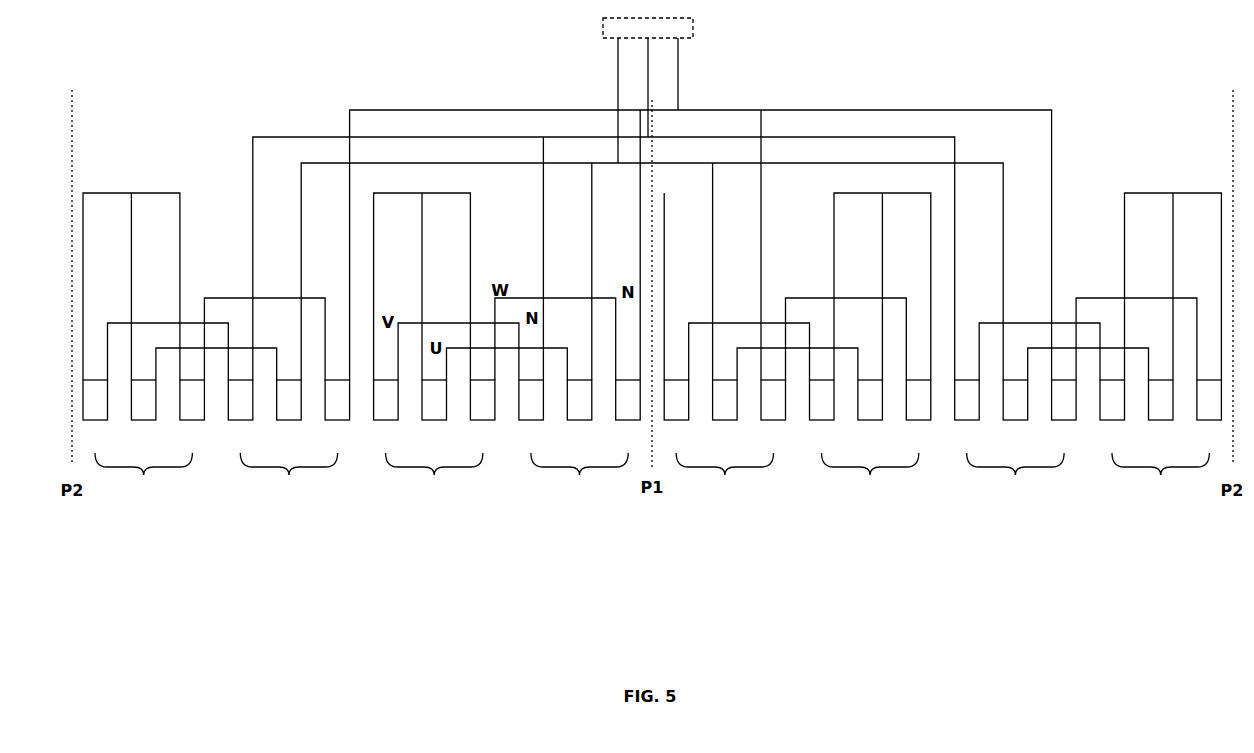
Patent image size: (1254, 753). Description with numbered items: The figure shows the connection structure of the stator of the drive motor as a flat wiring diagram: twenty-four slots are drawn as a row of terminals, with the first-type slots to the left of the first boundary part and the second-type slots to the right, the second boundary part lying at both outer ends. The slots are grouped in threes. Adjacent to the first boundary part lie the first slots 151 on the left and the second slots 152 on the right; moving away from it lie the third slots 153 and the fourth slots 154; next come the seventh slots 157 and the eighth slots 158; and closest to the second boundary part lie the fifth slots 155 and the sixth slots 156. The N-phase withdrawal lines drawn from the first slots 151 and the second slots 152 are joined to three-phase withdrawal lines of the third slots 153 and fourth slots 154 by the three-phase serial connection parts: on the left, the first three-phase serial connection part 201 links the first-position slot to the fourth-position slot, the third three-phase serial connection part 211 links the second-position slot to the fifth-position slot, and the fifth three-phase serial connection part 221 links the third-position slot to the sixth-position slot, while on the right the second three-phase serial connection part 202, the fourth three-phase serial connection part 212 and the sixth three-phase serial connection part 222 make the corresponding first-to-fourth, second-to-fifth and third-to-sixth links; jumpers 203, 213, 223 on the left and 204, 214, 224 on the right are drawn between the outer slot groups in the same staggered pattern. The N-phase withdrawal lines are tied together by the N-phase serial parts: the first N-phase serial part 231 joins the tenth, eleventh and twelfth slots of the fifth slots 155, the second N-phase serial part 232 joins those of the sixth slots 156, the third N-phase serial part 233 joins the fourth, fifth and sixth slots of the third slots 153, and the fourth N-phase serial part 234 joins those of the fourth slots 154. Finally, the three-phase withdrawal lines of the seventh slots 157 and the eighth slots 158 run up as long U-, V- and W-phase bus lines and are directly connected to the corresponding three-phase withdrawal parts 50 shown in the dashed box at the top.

The three-phase withdrawal part 50 is at (693, 30).
The first slots 151 is at (579, 441).
The second slots 152 is at (724, 441).
The third slots 153 is at (434, 441).
The fourth slots 154 is at (870, 441).
The fifth slots 155 is at (143, 441).
The sixth slots 156 is at (1161, 441).
The seventh slots 157 is at (289, 441).
The eighth slots 158 is at (1015, 441).
The first three-phase serial connection part 201 is at (533, 297).
The second three-phase serial connection part 202 is at (773, 322).
The coil connection 203 is at (266, 347).
The coil connection 204 is at (1138, 347).
The third three-phase serial connection part 211 is at (555, 347).
The fourth three-phase serial connection part 212 is at (850, 347).
The coil connection 213 is at (193, 322).
The coil connection 214 is at (1065, 322).
The fifth three-phase serial connection part 221 is at (482, 322).
The sixth three-phase serial connection part 222 is at (822, 297).
The coil connection 223 is at (243, 297).
The coil connection 224 is at (1113, 297).
The first N-phase serial part 231 is at (160, 192).
The second N-phase serial part 232 is at (1147, 192).
The third N-phase serial part 233 is at (460, 192).
The fourth N-phase serial part 234 is at (846, 192).